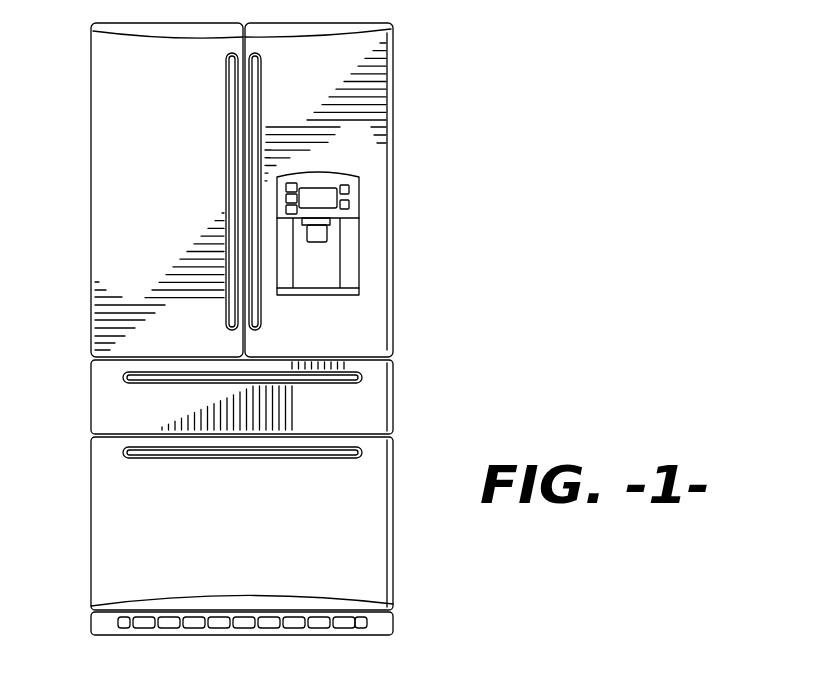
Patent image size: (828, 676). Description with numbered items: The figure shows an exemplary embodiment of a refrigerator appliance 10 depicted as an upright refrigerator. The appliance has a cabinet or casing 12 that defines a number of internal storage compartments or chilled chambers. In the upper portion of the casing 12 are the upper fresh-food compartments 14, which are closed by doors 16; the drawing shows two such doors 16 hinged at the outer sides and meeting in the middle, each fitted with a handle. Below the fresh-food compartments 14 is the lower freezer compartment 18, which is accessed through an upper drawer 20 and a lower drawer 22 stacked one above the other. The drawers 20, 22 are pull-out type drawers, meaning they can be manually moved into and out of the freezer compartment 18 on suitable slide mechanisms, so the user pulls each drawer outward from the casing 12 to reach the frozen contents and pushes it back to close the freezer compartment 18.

The refrigerator appliance 10 is at (447, 110).
The cabinet or casing 12 is at (394, 273).
The upper fresh-food compartments 14 is at (124, 163).
The doors 16 is at (152, 243).
The lower freezer compartment 18 is at (359, 402).
The upper drawer 20 is at (143, 422).
The lower drawer 22 is at (258, 541).